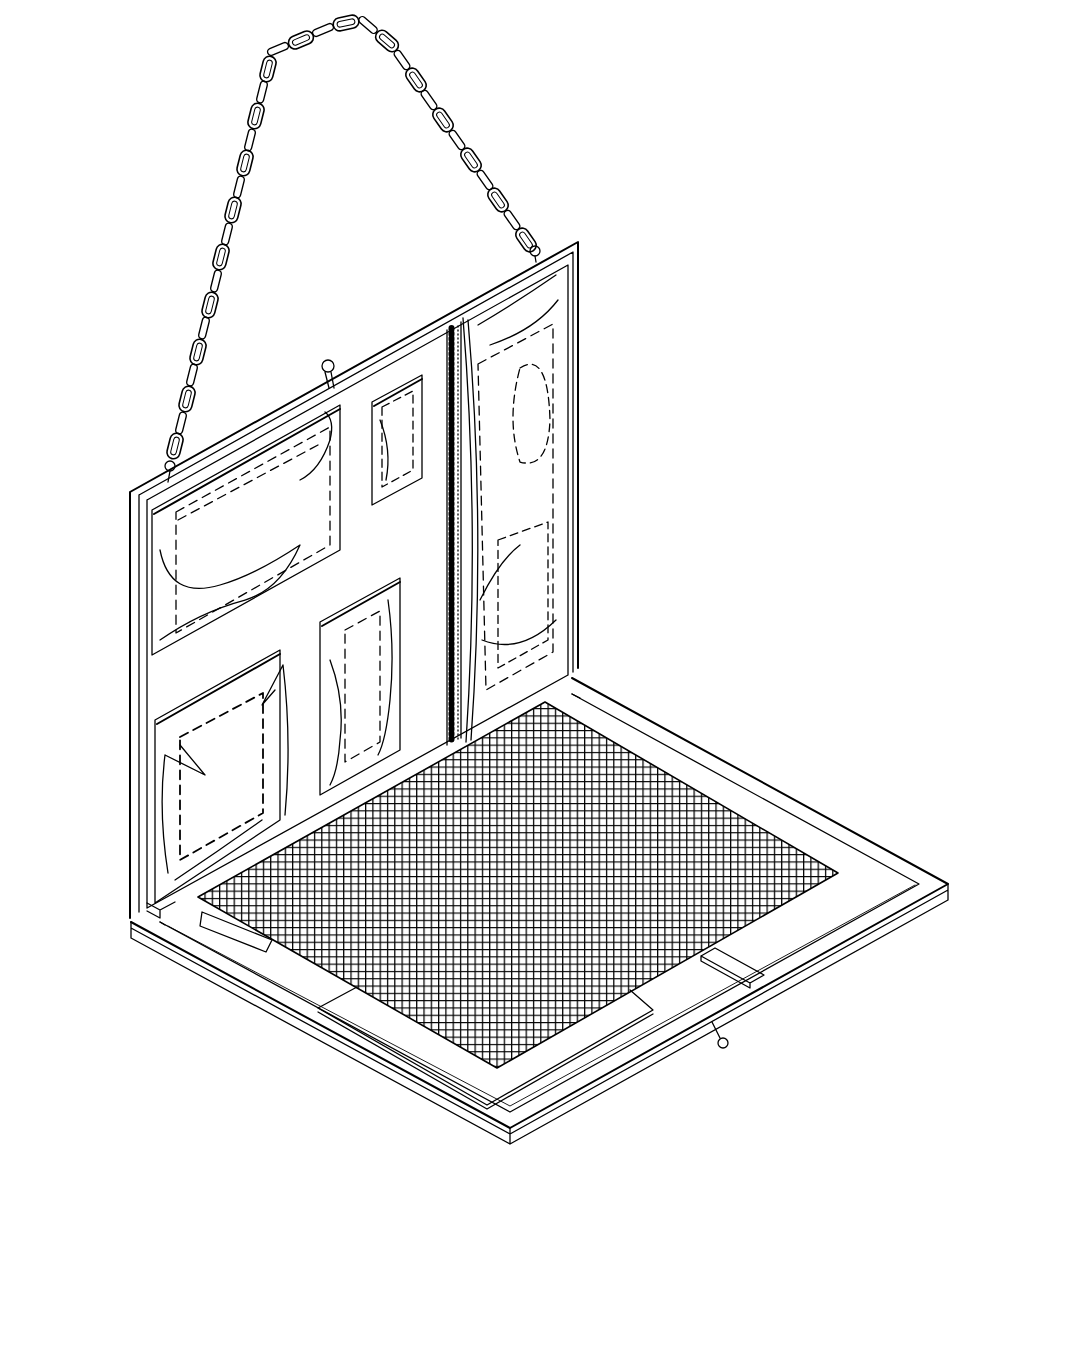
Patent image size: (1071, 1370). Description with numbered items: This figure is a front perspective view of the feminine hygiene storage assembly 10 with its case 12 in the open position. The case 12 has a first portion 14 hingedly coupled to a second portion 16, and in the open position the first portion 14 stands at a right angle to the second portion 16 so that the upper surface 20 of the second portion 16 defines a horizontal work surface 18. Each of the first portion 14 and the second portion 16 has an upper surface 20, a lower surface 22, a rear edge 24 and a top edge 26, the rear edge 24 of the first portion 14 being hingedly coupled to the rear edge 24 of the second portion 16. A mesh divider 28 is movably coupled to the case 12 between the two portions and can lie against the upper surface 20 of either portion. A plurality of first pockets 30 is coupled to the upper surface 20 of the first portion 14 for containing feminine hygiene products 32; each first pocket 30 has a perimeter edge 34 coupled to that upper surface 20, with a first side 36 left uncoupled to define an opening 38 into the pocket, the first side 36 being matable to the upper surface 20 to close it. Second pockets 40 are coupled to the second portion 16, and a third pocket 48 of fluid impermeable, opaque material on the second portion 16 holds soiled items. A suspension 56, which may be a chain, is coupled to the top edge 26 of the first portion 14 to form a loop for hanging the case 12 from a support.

The feminine hygiene storage assembly 10 is at (590, 100).
The case 12 is at (600, 268).
The first portion 14 is at (118, 662).
The second portion 16 is at (698, 1052).
The horizontal work surface 18 is at (720, 783).
The upper surface 20 is at (432, 352).
The lower surface 22 is at (136, 566).
The rear edge 24 is at (183, 897).
The top edge 26 is at (193, 418).
The mesh divider 28 is at (627, 748).
The first pockets 30 is at (229, 456).
The feminine hygiene products 32 is at (268, 482).
The perimeter edge 34 is at (468, 387).
The first side 36 is at (447, 398).
The opening 38 is at (447, 524).
The second pockets 40 is at (270, 966).
The third pocket 48 is at (736, 972).
The suspension 56 is at (258, 80).